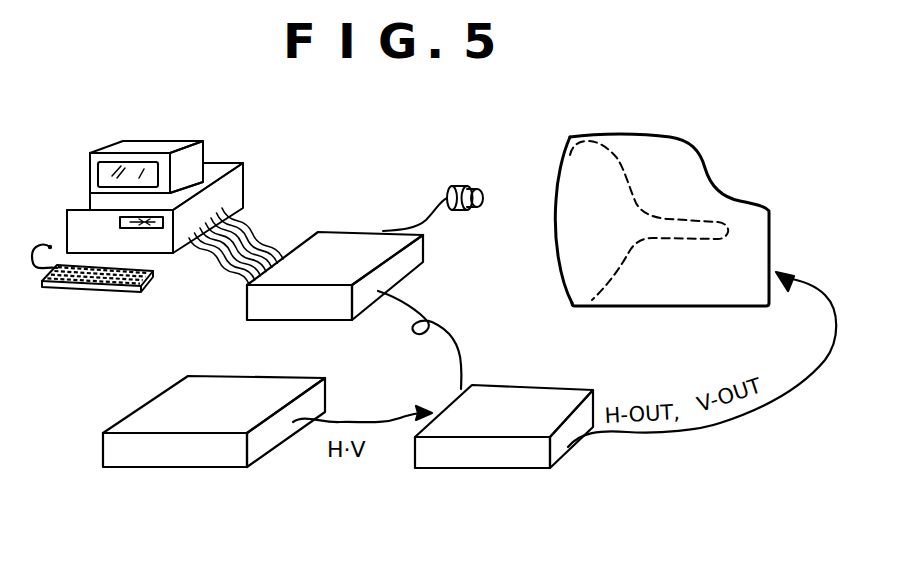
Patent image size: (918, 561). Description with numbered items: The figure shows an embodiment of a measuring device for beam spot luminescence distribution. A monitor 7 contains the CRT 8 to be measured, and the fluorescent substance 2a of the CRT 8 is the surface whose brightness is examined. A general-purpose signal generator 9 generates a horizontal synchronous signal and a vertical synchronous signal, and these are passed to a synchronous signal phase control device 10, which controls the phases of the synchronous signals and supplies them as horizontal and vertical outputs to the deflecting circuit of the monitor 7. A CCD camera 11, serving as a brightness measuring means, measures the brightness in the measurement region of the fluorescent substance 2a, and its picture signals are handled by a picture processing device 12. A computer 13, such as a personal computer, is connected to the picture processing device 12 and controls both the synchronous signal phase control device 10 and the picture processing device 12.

The computer 13 is at (220, 163).
The picture processing device 12 is at (355, 232).
The CCD camera 11 is at (481, 186).
The general-purpose signal generator 9 is at (217, 375).
The synchronous signal phase control device 10 is at (558, 395).
The monitor 7 is at (712, 177).
The CRT 8 is at (623, 171).
The fluorescent substance 2a is at (553, 218).